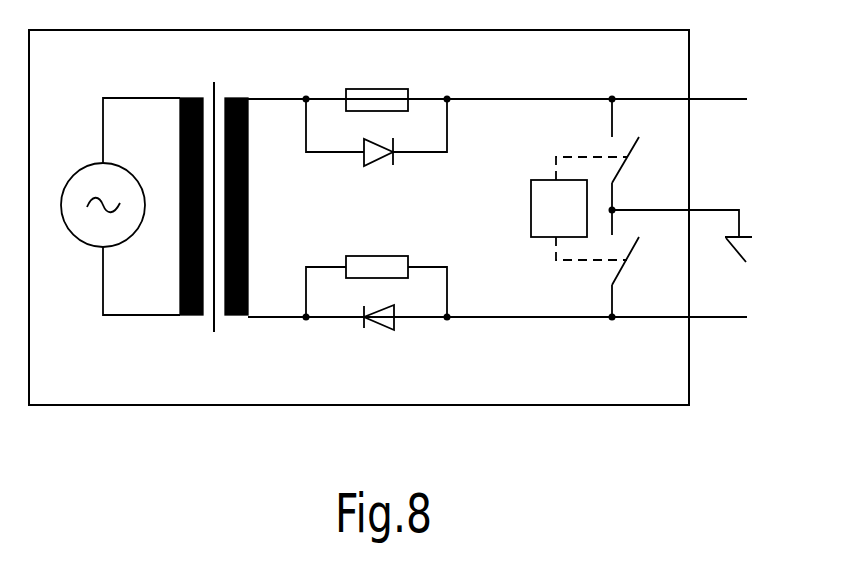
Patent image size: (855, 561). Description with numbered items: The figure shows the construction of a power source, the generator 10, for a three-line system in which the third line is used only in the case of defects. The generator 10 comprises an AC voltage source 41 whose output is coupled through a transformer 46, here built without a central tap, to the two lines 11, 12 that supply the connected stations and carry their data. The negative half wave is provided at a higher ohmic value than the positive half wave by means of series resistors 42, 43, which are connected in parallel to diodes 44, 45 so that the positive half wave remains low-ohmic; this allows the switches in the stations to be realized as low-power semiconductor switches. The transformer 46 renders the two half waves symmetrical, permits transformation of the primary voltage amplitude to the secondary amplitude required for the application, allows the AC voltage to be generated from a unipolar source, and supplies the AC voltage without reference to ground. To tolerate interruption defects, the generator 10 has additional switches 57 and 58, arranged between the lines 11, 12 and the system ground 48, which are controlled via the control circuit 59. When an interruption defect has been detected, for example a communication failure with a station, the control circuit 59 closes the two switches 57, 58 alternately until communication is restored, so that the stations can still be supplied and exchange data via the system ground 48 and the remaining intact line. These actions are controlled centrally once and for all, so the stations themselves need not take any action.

The generator 10 is at (608, 405).
The first line 11 is at (716, 100).
The second line 12 is at (714, 318).
The AC voltage source 41 is at (82, 167).
The first series resistor 42 is at (378, 88).
The second series resistor 43 is at (379, 255).
The first diode 44 is at (364, 163).
The second diode 45 is at (394, 323).
The transformer 46 is at (233, 318).
The system ground 48 is at (685, 251).
The first additional switch 57 is at (621, 176).
The second additional switch 58 is at (614, 281).
The control circuit 59 is at (531, 218).